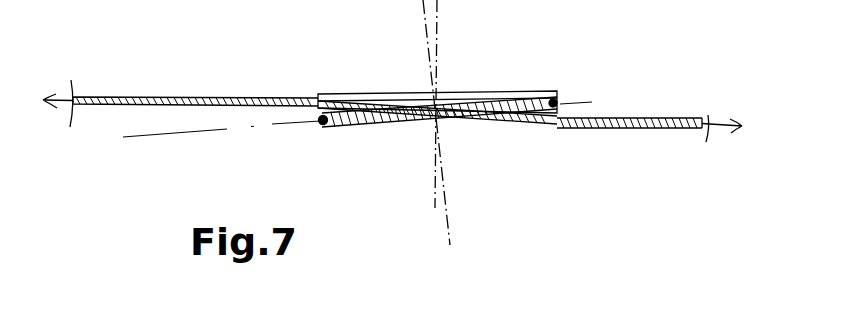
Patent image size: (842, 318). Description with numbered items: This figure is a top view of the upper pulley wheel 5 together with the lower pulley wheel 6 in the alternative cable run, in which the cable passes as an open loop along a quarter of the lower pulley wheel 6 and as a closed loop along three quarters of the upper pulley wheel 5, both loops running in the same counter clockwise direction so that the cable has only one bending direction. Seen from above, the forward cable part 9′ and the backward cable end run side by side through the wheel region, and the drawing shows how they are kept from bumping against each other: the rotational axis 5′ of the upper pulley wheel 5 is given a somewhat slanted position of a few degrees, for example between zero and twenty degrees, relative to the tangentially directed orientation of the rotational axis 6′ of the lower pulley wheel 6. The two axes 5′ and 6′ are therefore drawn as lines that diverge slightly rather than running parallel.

The forward cable part 9′ is at (177, 97).
The lower pulley wheel 6 is at (348, 95).
The upper pulley wheel 5 is at (364, 127).
The rotational axis of the lower pulley wheel 6′ is at (435, 190).
The rotational axis of the upper pulley wheel 5′ is at (445, 220).